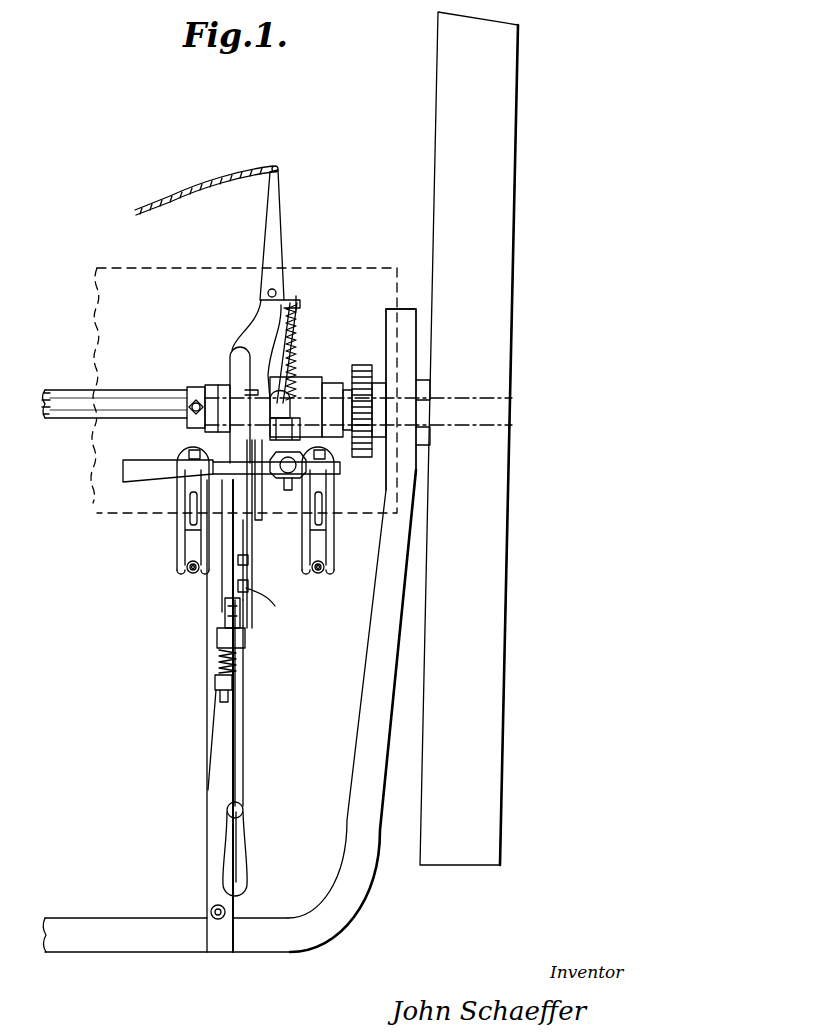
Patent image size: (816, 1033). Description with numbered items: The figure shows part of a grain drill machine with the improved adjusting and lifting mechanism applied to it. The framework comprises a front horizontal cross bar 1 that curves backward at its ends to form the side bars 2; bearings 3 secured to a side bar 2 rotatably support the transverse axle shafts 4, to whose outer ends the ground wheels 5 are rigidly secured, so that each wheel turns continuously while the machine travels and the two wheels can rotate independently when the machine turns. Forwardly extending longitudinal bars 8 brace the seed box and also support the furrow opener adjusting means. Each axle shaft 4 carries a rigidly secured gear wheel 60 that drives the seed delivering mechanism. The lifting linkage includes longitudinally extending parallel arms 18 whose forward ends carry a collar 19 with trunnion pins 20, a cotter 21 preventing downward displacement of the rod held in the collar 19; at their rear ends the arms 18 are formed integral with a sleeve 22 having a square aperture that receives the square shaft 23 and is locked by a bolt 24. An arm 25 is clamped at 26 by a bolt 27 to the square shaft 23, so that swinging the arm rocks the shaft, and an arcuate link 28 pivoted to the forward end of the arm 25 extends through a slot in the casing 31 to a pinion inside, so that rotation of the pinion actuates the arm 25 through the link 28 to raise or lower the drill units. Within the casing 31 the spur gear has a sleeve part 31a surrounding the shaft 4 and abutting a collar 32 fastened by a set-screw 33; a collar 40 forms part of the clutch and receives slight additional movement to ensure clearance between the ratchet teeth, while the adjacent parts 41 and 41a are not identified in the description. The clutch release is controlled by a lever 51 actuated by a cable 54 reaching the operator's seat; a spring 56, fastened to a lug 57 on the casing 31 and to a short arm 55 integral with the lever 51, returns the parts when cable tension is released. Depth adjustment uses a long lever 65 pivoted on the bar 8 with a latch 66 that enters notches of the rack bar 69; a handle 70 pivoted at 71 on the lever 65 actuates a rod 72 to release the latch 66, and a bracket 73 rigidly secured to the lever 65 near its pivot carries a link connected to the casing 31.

The front horizontal cross bar 1 is at (146, 953).
The side bars 2 is at (370, 689).
The bearings 3 is at (388, 368).
The transverse axle shafts 4 is at (482, 410).
The ground wheels 5 is at (469, 438).
The longitudinal bars 8 is at (206, 822).
The parallel arms 18 is at (185, 538).
The collar 19 is at (197, 575).
The trunnion pins 20 is at (178, 566).
The cotter 21 is at (190, 573).
The sleeve 22 is at (330, 460).
The square shaft 23 is at (146, 480).
The bolt 24 is at (193, 457).
The arm 25 is at (312, 566).
The clamp 26 is at (290, 430).
The bolt 27 is at (261, 477).
The arcuate link 28 is at (249, 587).
The casing 31 is at (240, 358).
The sleeve part 31a is at (212, 385).
The collar 32 is at (192, 392).
The set-screw 33 is at (190, 418).
The collar 40 is at (308, 377).
The collar 41 is at (340, 383).
The shaft end 41a is at (374, 448).
The lever 51 is at (276, 235).
The cable 54 is at (178, 190).
The short arm 55 is at (292, 300).
The spring 56 is at (300, 345).
The lug 57 is at (292, 406).
The gear wheel 60 is at (374, 413).
The long lever 65 is at (244, 738).
The latch 66 is at (247, 638).
The rack bar 69 is at (225, 612).
The handle 70 is at (246, 866).
The pivot 71 is at (244, 812).
The rod 72 is at (233, 727).
The bracket 73 is at (262, 596).